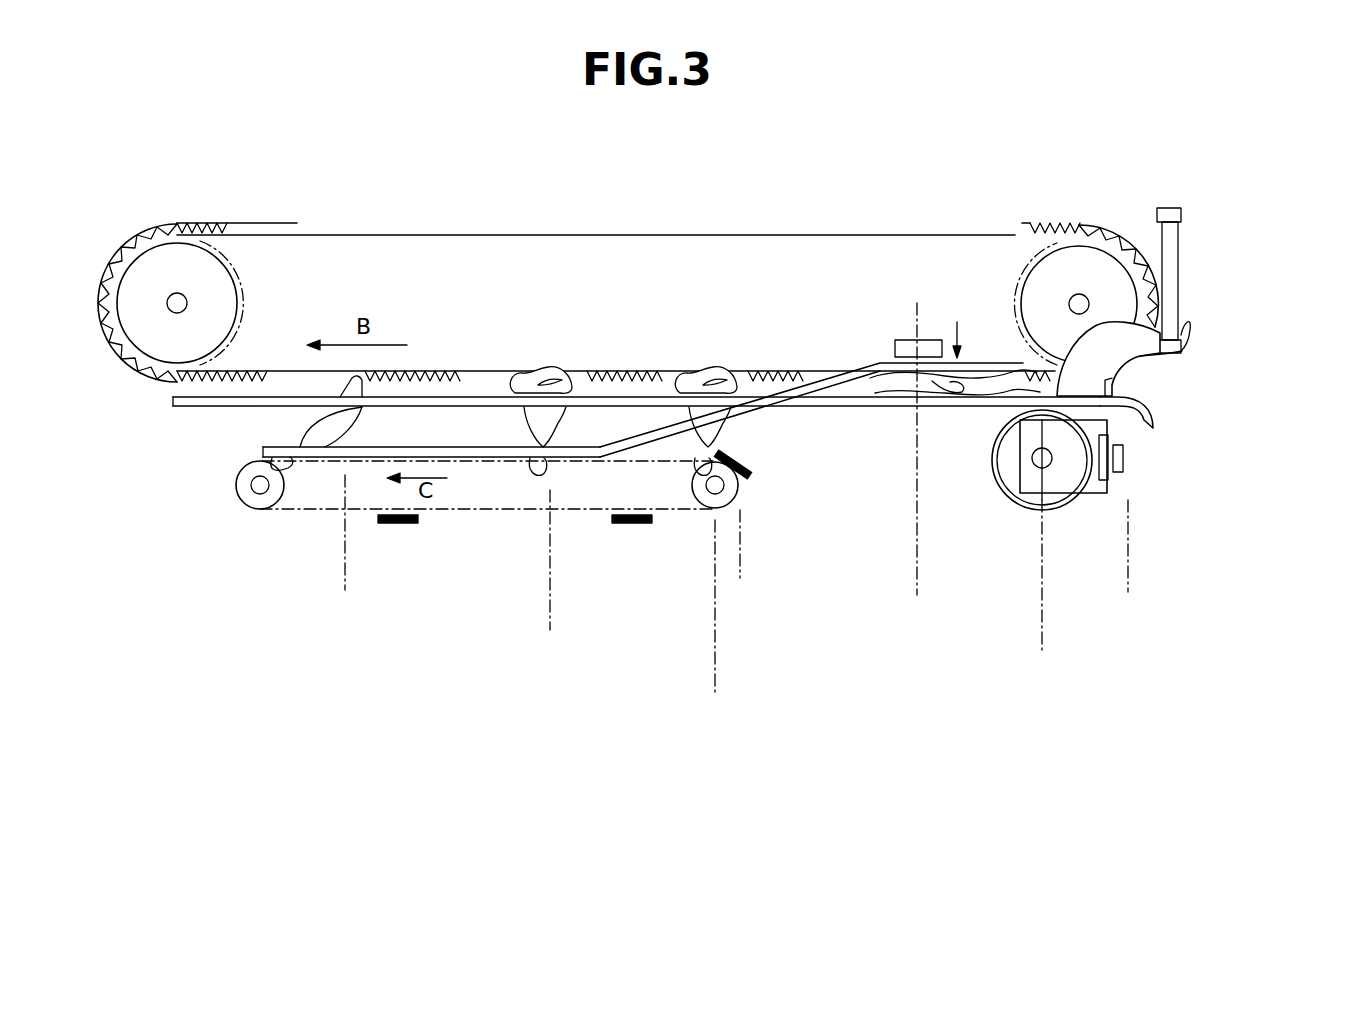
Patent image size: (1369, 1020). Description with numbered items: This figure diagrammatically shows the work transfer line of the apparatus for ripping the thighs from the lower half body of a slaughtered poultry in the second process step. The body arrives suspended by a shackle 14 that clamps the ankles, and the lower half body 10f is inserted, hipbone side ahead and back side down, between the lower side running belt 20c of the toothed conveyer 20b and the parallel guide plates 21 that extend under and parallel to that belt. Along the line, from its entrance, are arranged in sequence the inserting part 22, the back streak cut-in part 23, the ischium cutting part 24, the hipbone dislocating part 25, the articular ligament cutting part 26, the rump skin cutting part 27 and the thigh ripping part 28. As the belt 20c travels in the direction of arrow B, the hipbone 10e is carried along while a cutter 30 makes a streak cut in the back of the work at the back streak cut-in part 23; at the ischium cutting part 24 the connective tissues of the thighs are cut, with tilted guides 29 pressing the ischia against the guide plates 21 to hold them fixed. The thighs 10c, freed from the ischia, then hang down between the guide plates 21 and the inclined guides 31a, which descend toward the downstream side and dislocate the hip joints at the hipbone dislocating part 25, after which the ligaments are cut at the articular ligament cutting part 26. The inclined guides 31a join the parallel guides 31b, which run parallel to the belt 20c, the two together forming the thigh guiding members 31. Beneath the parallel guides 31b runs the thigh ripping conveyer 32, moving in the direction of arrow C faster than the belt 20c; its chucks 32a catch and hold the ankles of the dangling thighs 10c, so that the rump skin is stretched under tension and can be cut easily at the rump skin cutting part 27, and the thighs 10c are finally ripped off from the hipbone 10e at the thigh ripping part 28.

The conveyer with teeth 20b is at (935, 235).
The lower side running belt 20c is at (140, 380).
The shackle 14 is at (1172, 268).
The tilted guides 29 is at (940, 339).
The hipbone 10e is at (555, 372).
The thighs 10c is at (285, 442).
The lower half body 10f is at (1192, 395).
The parallel guides 31b is at (392, 450).
The inclined guides 31a is at (680, 437).
The guide member 31 is at (649, 458).
The thigh ripping conveyer 32 is at (583, 510).
The chucks 32a is at (756, 469).
The parallel guide plates 21 is at (1153, 430).
The cutter 30 is at (1065, 508).
The thigh ripping part 28 is at (394, 576).
The rump skin cutting part 27 is at (571, 615).
The hipbone dislocating part 25 is at (790, 580).
The articular ligament cutting part 26 is at (792, 649).
The ischium cutting part 24 is at (956, 483).
The inserting part 22 is at (1224, 562).
The back streak cut-in part 23 is at (1125, 618).